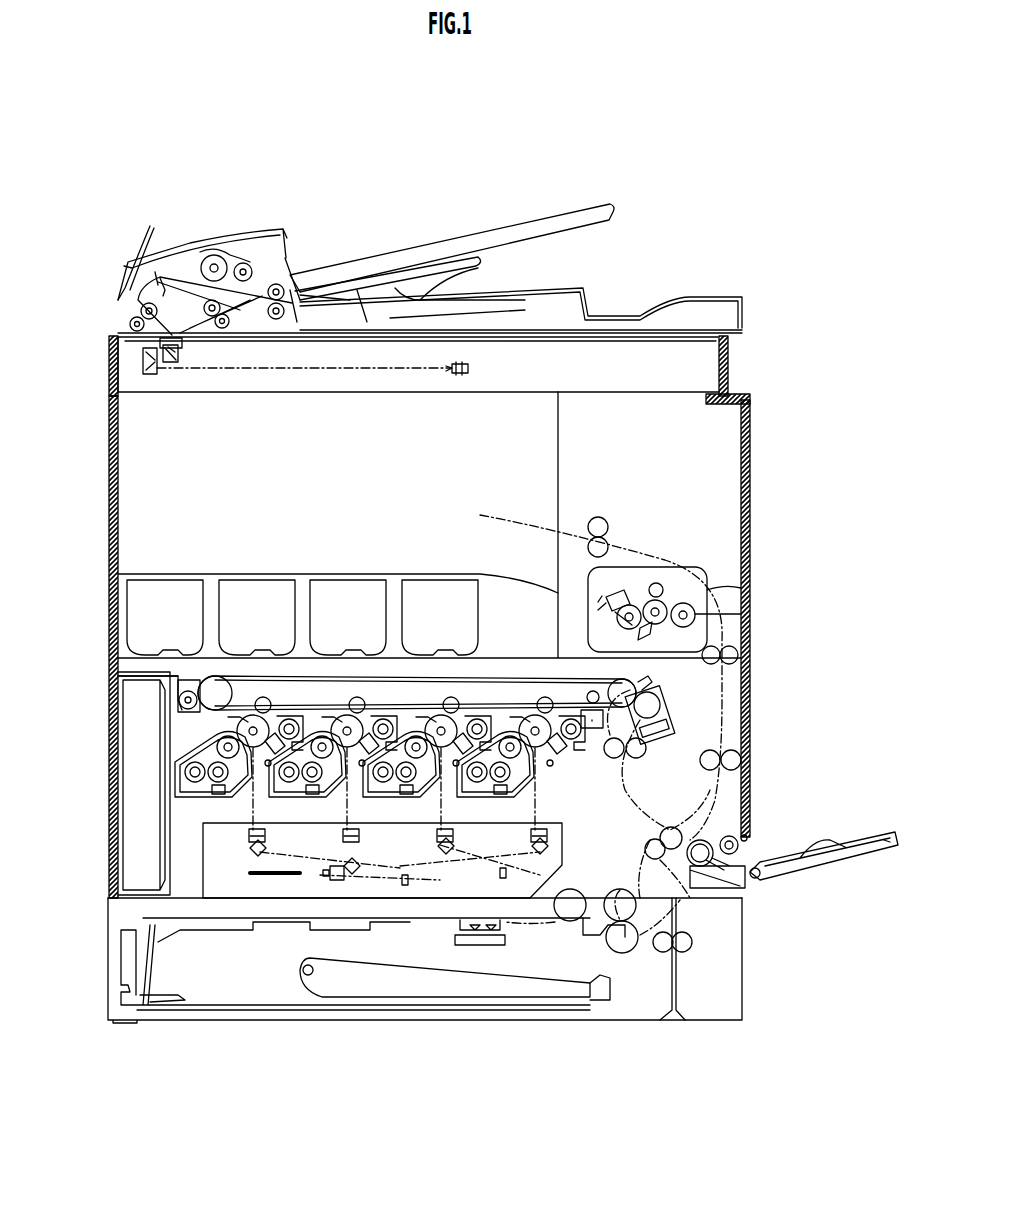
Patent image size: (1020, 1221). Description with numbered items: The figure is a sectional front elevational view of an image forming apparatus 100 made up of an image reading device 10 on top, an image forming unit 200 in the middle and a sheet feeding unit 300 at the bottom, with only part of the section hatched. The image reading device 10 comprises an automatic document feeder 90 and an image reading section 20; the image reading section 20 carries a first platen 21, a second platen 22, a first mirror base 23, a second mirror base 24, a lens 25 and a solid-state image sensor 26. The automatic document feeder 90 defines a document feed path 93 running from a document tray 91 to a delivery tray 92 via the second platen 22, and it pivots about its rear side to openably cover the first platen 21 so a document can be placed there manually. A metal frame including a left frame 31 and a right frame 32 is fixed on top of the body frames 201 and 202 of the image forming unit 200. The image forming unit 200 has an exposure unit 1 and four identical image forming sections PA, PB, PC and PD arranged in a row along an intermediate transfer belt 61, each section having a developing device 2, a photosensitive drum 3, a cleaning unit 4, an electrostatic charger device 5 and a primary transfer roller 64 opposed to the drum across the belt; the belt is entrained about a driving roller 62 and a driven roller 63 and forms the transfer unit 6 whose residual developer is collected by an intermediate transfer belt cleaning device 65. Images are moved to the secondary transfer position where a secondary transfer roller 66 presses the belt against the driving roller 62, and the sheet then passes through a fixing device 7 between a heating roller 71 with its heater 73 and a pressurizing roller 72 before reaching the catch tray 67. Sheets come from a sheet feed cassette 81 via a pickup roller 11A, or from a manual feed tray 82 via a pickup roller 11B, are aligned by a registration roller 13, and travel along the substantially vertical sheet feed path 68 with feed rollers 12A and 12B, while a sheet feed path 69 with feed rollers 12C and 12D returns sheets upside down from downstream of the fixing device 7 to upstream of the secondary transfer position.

The image forming apparatus 100 is at (770, 212).
The image reading device 10 is at (101, 220).
The automatic document feeder 90 is at (236, 226).
The document tray 91 is at (465, 222).
The delivery tray 92 is at (566, 290).
The document feed path 93 is at (125, 275).
The image reading section 20 is at (733, 372).
The first platen 21 is at (550, 340).
The second platen 22 is at (182, 347).
The first mirror base 23 is at (172, 365).
The second mirror base 24 is at (150, 376).
The lens 25 is at (448, 372).
The solid-state image sensor 26 is at (462, 376).
The left frame 31 is at (119, 400).
The right frame 32 is at (740, 337).
The image forming unit 200 is at (101, 400).
The body frame 201 is at (118, 501).
The body frame 202 is at (750, 457).
The catch tray 67 is at (348, 574).
The image forming section PD is at (270, 670).
The image forming section PC is at (326, 690).
The image forming section PB is at (420, 690).
The image forming section PA is at (512, 690).
The intermediate transfer belt cleaning device 65 is at (190, 692).
The driven roller 63 is at (222, 684).
The intermediate transfer unit 6 is at (505, 680).
The intermediate transfer belt 61 is at (540, 686).
The driving roller 62 is at (632, 688).
The primary transfer roller 64 is at (267, 700).
The developing device 2 is at (216, 740).
The photosensitive drum 3 is at (253, 714).
The cleaning unit 4 is at (291, 719).
The electrostatic charger device 5 is at (255, 780).
The exposure unit 1 is at (565, 845).
The fixing device 7 is at (748, 587).
The pressurizing roller 72 is at (748, 617).
The heating roller 71 is at (668, 600).
The heater 73 is at (622, 592).
The feed roller 12B is at (600, 517).
The feed roller 12C is at (738, 655).
The feed roller 12D is at (741, 760).
The secondary transfer roller 66 is at (660, 705).
The registration roller 13 is at (646, 748).
The sheet feed path 69 is at (730, 702).
The sheet feed path 68 is at (640, 808).
The feed roller 12A is at (682, 836).
The pickup roller 11B is at (742, 848).
The manual feed tray 82 is at (840, 832).
The pickup roller 11A is at (570, 895).
The sheet feeding unit 300 is at (101, 903).
The sheet feed cassette 81 is at (372, 970).